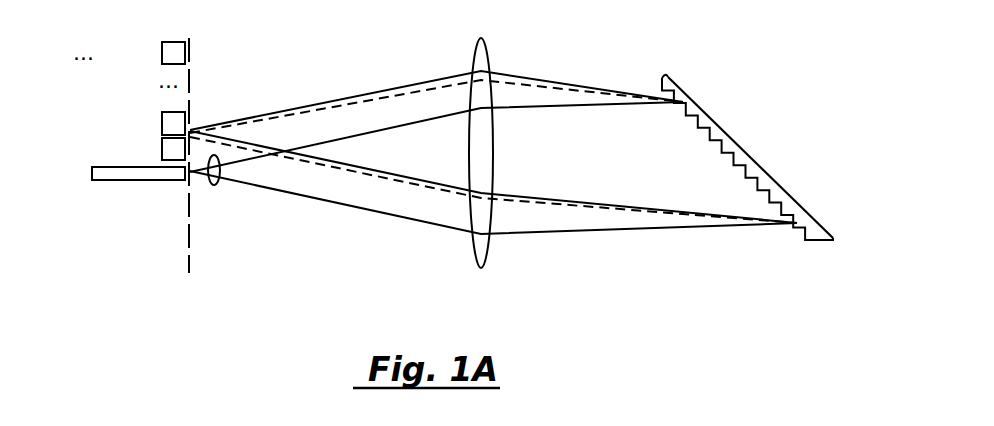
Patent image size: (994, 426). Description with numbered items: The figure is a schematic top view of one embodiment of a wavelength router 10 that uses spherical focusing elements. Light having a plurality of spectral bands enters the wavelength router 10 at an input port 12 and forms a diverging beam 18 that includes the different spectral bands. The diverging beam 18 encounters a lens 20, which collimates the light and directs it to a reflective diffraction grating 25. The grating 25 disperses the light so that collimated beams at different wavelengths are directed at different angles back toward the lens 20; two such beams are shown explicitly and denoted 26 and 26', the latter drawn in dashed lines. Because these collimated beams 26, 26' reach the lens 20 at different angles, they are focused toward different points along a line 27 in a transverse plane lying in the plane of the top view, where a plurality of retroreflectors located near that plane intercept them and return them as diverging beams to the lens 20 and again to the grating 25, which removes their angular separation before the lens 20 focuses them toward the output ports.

The wavelength router 10 is at (223, 247).
The input port 12 is at (170, 181).
The diverging beam 18 is at (217, 186).
The lens 20 is at (472, 243).
The reflective diffraction grating 25 is at (668, 75).
The collimated beam 26 is at (493, 138).
The collimated beam 26' is at (493, 120).
The line 27 is at (187, 237).